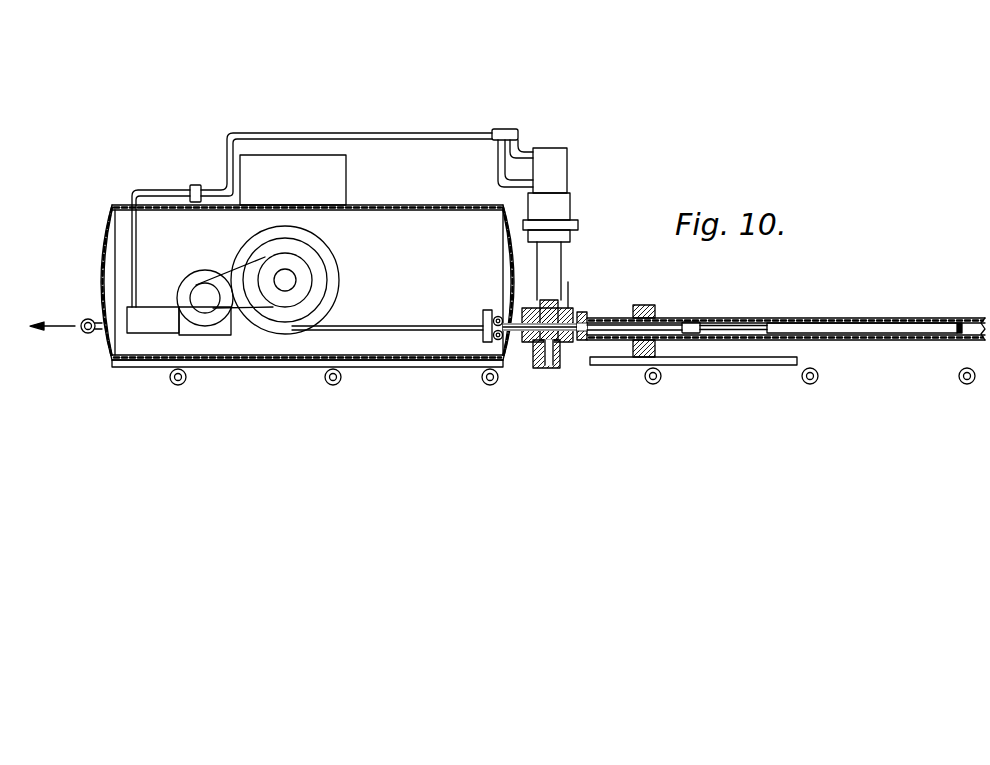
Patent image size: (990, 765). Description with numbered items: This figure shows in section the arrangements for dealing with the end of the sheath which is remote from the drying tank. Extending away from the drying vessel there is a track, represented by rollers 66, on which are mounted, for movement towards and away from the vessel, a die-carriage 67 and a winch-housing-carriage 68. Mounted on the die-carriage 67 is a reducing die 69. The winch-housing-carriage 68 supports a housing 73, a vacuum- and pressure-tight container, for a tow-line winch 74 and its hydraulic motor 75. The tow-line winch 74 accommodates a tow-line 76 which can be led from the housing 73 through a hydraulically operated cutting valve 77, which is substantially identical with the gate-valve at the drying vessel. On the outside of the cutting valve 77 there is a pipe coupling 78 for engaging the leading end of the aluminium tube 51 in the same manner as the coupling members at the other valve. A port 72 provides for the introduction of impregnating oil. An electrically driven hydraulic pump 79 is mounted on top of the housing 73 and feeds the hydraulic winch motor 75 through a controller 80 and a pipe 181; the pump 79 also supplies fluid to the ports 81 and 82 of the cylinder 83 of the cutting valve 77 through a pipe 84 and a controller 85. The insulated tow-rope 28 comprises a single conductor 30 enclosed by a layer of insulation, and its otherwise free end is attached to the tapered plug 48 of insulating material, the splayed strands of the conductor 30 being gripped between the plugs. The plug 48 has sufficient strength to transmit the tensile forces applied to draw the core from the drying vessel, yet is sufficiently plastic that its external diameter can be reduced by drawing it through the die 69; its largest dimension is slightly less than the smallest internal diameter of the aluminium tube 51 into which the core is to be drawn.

The pipe 181 is at (155, 192).
The controller 80 is at (194, 186).
The pipe 84 is at (344, 137).
The electrically driven hydraulic pump 79 is at (272, 163).
The controller 85 is at (503, 132).
The port 81 is at (518, 152).
The port 82 is at (497, 160).
The cylinder 83 is at (558, 160).
The housing 73 is at (152, 352).
The hydraulic motor 75 is at (178, 333).
The tow-line winch 74 is at (300, 270).
The tow-line 76 is at (355, 326).
The port 72 is at (560, 286).
The hydraulically operated cutting valve 77 is at (567, 272).
The pipe coupling 78 is at (584, 303).
The reducing die 69 is at (655, 305).
The tapered plug 48 is at (695, 320).
The conductor 30 is at (748, 328).
The insulated tow-rope 28 is at (842, 325).
The aluminium tube 51 is at (967, 320).
The winch-housing-carriage 68 is at (272, 363).
The die-carriage 67 is at (735, 365).
The rollers 66 is at (172, 383).